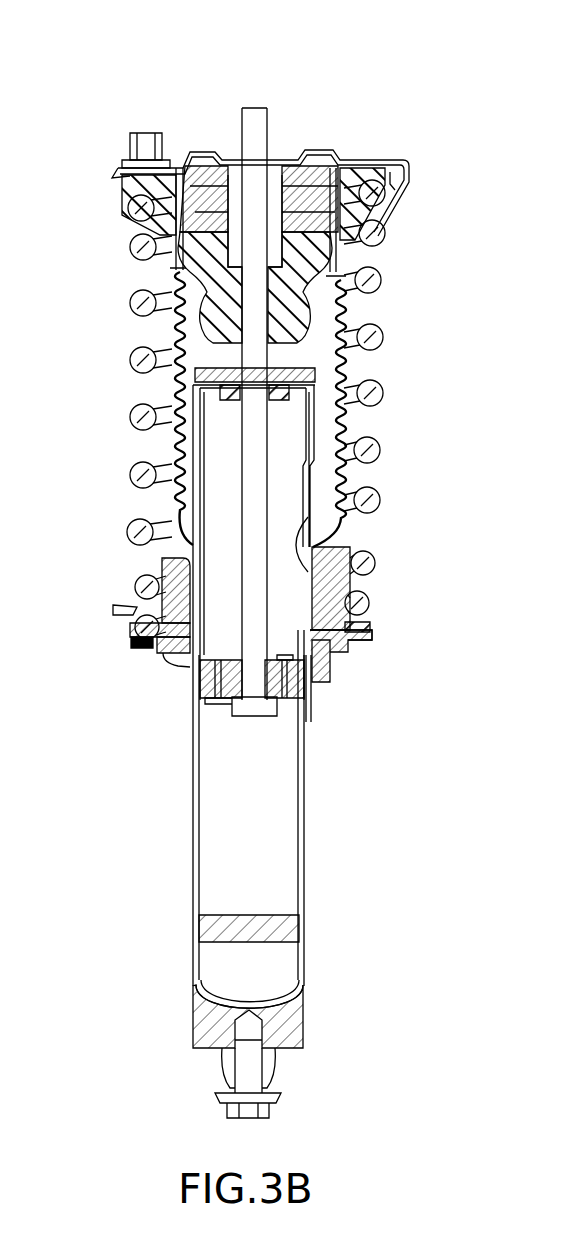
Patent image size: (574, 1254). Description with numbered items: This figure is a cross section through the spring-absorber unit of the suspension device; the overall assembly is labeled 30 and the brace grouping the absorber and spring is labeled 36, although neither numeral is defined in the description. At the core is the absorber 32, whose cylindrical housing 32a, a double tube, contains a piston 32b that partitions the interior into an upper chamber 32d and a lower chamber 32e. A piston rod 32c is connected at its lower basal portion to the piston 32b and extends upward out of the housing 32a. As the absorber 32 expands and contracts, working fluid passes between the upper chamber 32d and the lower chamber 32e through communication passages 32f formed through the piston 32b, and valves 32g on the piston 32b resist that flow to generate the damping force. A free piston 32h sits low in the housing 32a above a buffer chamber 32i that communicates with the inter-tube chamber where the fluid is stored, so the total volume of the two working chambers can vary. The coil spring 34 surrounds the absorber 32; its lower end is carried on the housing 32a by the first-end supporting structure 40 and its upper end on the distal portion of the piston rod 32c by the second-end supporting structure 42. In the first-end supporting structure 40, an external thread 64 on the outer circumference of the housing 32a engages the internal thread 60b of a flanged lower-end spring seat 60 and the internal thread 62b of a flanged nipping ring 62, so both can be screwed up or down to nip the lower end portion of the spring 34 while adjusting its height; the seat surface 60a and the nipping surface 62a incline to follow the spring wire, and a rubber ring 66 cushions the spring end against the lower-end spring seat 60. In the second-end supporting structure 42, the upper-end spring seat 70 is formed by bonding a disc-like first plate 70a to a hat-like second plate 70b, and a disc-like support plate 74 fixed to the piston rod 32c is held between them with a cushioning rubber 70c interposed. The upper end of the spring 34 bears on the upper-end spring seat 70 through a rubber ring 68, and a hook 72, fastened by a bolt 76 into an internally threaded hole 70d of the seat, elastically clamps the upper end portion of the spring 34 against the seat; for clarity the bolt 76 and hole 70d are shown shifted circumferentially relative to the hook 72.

The shock absorber assembly 30 is at (6, 517).
The absorber 32 is at (187, 548).
The cylindrical housing 32a is at (196, 845).
The piston 32b is at (195, 690).
The piston rod 32c is at (250, 357).
The upper chamber 32d is at (212, 452).
The lower chamber 32e is at (213, 797).
The communication passages 32f is at (197, 660).
The valves 32g is at (300, 705).
The free piston 32h is at (285, 930).
The buffer chamber 32i is at (275, 970).
The spring 34 is at (118, 533).
The suspension unit 36 is at (24, 546).
The first-end supporting structure 40 is at (432, 640).
The second-end supporting structure 42 is at (438, 152).
The lower-end spring seat 60 is at (302, 680).
The seat surface 60a is at (322, 657).
The internal thread 60b is at (295, 677).
The nipping ring 62 is at (333, 587).
The nipping surface 62a is at (313, 558).
The internal thread 62b is at (300, 527).
The external thread 64 is at (305, 690).
The rubber ring 66 is at (372, 603).
The rubber ring 68 is at (125, 177).
The upper-end spring seat 70 is at (337, 140).
The first plate 70a is at (202, 158).
The second plate 70b is at (180, 160).
The cushioning rubber 70c is at (222, 157).
The internally threaded holes 70d is at (140, 147).
The hooks 72 is at (407, 187).
The support plate 74 is at (287, 157).
The bolts 76 is at (143, 137).